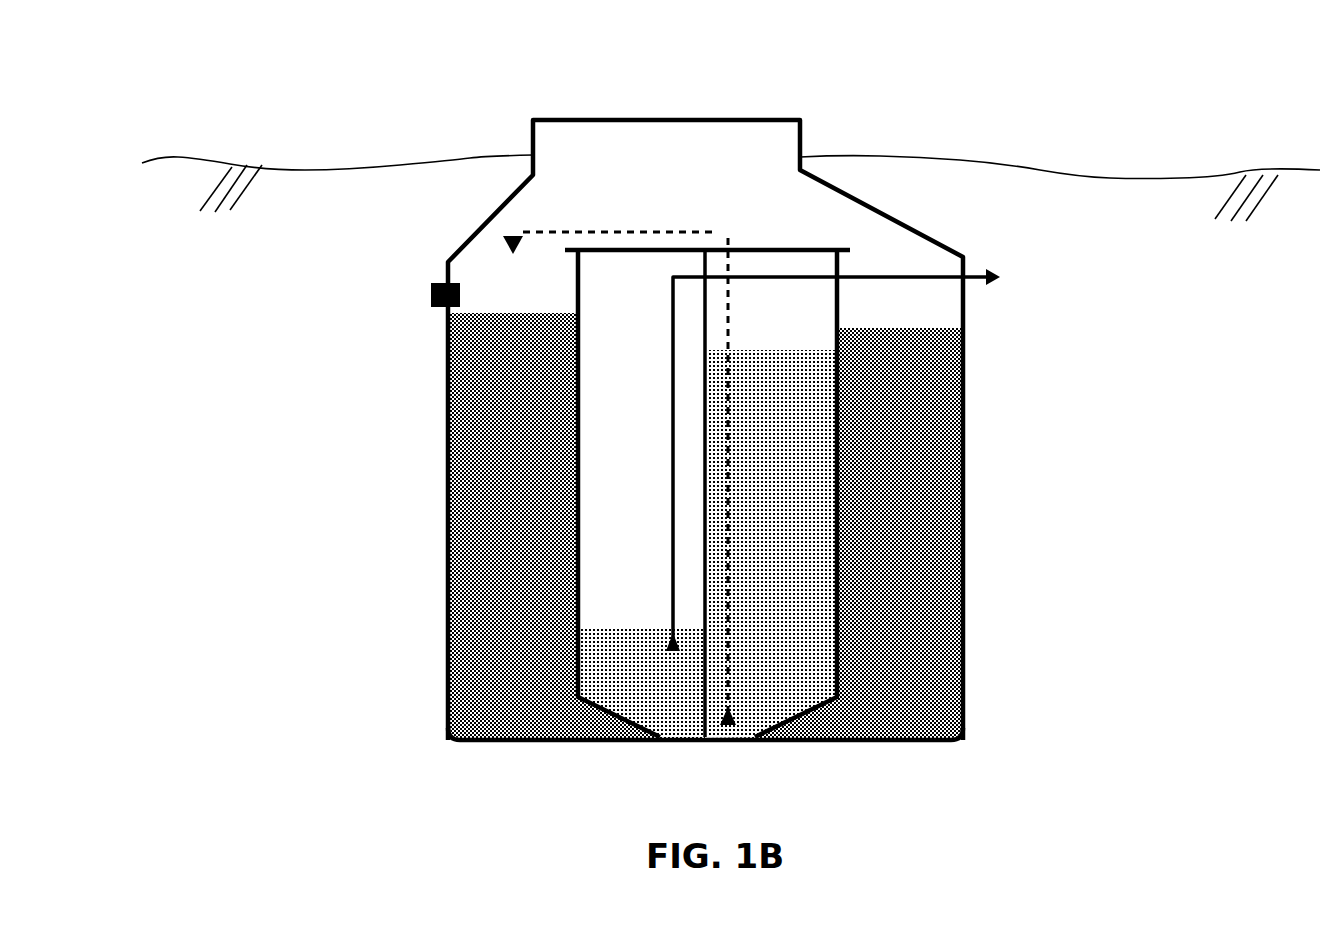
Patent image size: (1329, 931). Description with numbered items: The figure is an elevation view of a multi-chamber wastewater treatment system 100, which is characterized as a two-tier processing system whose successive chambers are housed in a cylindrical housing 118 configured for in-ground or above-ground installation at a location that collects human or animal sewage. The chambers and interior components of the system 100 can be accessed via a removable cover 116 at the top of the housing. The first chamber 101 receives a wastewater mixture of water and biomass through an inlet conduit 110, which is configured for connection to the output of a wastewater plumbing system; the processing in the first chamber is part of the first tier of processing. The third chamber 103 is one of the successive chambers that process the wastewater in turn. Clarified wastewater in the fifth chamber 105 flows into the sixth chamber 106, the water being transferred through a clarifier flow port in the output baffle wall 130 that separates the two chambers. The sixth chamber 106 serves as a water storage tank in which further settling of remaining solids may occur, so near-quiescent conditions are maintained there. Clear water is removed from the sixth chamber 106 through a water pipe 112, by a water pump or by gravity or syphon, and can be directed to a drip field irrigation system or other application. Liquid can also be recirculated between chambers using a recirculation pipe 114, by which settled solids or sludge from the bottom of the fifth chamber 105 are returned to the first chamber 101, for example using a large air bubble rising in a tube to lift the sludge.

The wastewater treatment system 100 is at (253, 99).
The first chamber 101 is at (500, 308).
The third chamber 103 is at (922, 321).
The fifth chamber 105 is at (790, 342).
The sixth chamber 106 is at (648, 613).
The inlet conduit 110 is at (431, 291).
The water pipe 112 is at (1006, 259).
The recirculation pipe 114 is at (570, 226).
The removable cover 116 is at (803, 113).
The cylindrical housing 118 is at (964, 431).
The output baffle wall 130 is at (703, 361).